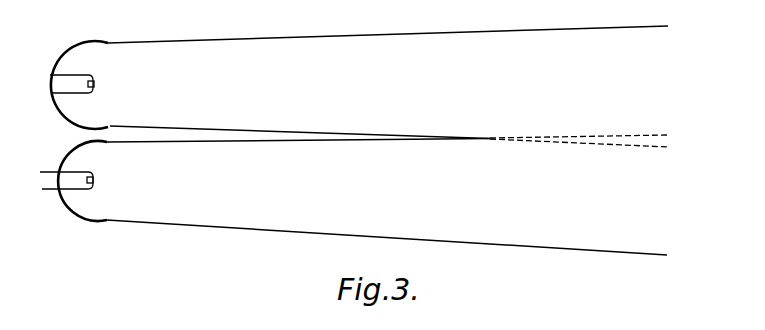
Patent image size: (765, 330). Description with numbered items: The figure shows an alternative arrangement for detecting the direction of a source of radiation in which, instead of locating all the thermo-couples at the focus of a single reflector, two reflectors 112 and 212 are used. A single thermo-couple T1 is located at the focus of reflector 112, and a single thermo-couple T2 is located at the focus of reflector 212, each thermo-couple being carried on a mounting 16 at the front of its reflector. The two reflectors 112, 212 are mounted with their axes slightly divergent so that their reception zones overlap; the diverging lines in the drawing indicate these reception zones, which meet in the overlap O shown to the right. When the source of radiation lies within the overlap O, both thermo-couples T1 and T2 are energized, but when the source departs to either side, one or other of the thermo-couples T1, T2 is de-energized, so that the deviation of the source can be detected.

The reflector 112 is at (85, 66).
The reflector 212 is at (86, 205).
The lamp body / socket 16 is at (50, 75).
The thermo-couple T1 is at (95, 85).
The thermo-couple T2 is at (94, 180).
The overlap O is at (652, 138).